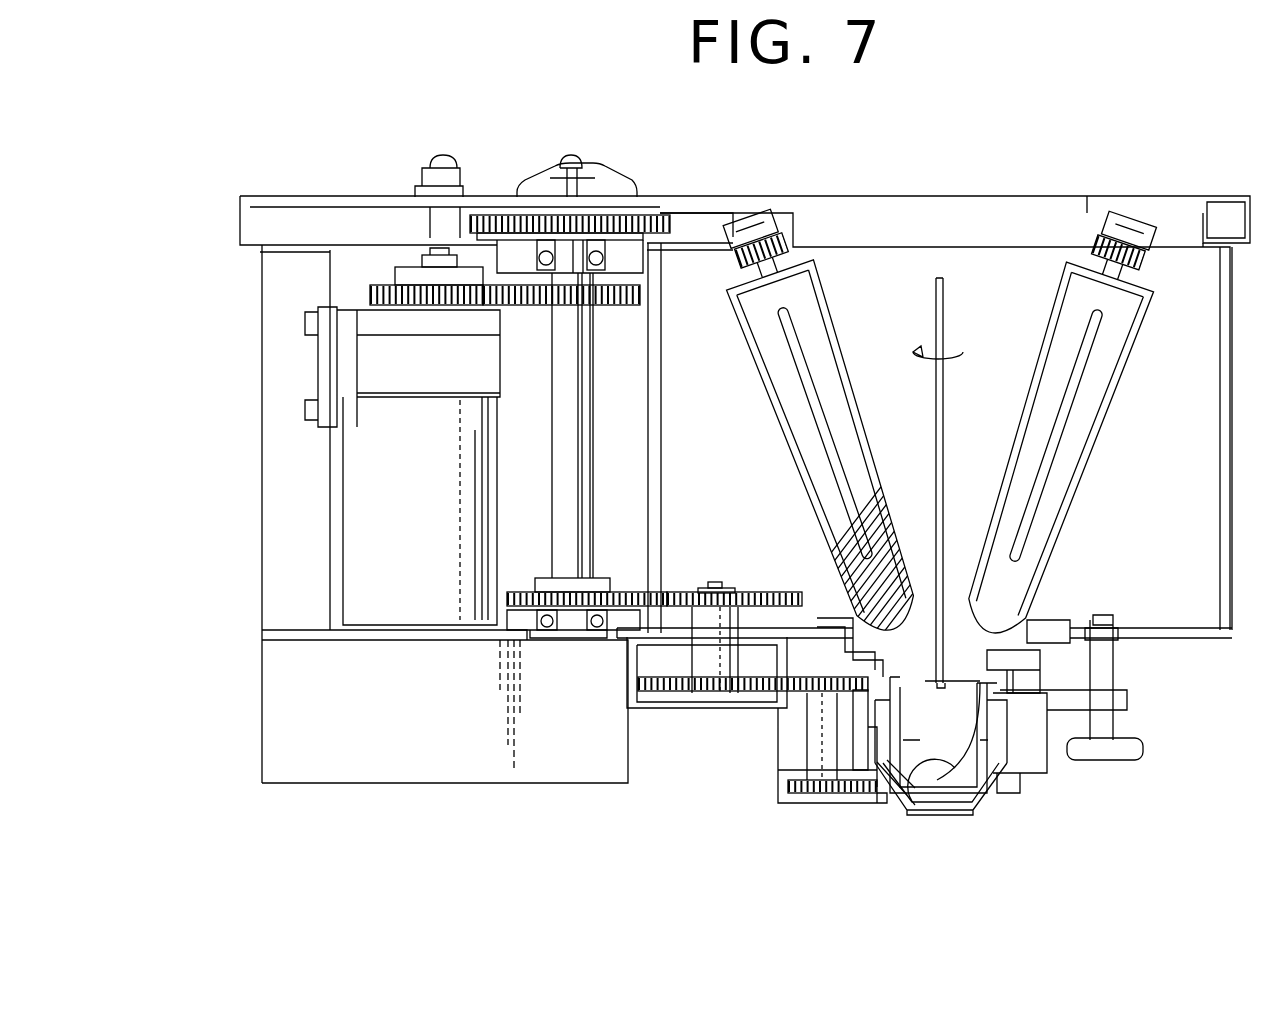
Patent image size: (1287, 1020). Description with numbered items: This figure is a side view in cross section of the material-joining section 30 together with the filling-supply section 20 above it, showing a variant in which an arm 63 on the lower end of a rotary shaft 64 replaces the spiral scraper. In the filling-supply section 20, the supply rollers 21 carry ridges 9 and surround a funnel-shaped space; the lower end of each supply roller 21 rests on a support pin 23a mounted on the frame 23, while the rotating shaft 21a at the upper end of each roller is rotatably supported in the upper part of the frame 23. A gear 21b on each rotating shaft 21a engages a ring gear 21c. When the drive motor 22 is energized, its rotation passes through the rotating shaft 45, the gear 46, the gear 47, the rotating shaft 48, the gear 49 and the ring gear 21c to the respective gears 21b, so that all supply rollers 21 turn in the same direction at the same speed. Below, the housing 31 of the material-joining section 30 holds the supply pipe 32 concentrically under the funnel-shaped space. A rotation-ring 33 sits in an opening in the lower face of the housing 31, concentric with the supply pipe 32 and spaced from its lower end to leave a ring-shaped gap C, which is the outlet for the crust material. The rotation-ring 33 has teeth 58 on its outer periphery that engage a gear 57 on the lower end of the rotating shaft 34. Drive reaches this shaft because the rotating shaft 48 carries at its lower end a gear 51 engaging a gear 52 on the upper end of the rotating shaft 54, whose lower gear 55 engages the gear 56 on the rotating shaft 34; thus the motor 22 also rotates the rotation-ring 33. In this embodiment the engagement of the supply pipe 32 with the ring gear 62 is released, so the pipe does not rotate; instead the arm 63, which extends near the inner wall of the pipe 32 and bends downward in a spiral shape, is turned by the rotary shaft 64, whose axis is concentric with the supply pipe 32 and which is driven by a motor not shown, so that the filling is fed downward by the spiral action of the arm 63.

The ridges 9 is at (1060, 287).
The filling-supply section 20 is at (950, 257).
The supply roller 21 is at (1122, 323).
The rotating shaft 21a is at (1122, 223).
The gear 21b is at (737, 258).
The ring gear 21c is at (787, 218).
The drive motor 22 is at (431, 615).
The frame 23 is at (1180, 640).
The support pin 23a is at (842, 655).
The material-joining section 30 is at (1030, 727).
The housing 31 is at (1037, 753).
The supply pipe 32 is at (993, 780).
The rotation-ring 33 is at (990, 812).
The rotating shaft 34 is at (823, 738).
The rotating shaft 45 is at (460, 318).
The gear 46 is at (390, 287).
The gear 47 is at (610, 303).
The rotating shaft 48 is at (562, 470).
The gear 49 is at (647, 217).
The gear 51 is at (622, 593).
The gear 52 is at (680, 592).
The rotating shaft 54 is at (698, 655).
The gear 55 is at (687, 703).
The gear 56 is at (813, 690).
The gear 57 is at (835, 792).
The teeth 58 is at (882, 802).
The ring gear 62 is at (1053, 660).
The arm 63 is at (958, 765).
The rotary shaft 64 is at (943, 313).
The ring-shaped gap C is at (920, 813).